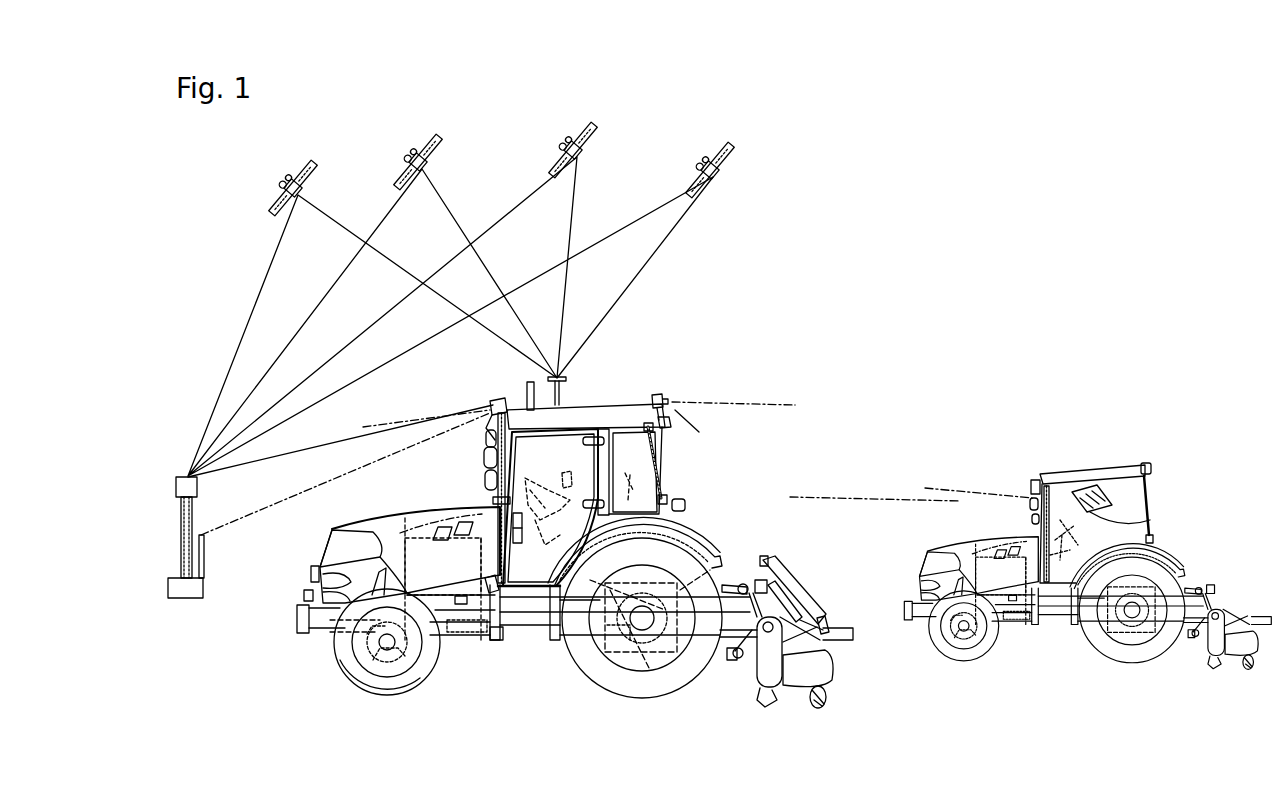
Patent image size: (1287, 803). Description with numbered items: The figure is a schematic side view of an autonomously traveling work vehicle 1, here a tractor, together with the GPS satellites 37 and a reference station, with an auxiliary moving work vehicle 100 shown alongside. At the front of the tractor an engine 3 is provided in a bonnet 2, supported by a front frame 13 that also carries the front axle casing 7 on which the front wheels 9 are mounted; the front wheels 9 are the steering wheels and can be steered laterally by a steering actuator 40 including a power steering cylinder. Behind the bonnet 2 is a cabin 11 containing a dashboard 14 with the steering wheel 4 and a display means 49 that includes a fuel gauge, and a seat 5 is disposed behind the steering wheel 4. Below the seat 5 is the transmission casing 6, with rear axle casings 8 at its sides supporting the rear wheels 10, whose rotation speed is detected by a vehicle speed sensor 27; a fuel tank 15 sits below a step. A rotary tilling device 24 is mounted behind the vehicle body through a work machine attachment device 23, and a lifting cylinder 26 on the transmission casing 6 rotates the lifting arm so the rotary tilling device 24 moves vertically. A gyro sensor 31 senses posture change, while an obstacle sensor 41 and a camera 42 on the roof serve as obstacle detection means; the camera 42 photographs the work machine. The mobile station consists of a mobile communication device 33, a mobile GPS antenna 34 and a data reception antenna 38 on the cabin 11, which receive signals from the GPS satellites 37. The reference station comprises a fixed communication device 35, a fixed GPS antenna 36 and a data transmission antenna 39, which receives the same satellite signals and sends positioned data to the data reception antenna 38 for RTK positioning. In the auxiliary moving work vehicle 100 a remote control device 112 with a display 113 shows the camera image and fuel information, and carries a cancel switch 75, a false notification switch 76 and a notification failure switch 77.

The autonomously traveling work vehicle 1 is at (681, 362).
The bonnet 2 is at (383, 507).
The engine 3 is at (497, 428).
The steering wheel 4 is at (565, 482).
The seat 5 is at (633, 473).
The transmission casing 6 is at (741, 567).
The front axle casing 7 is at (341, 678).
The rear axle casing 8 is at (670, 690).
The front wheels 9 is at (367, 692).
The rear wheels 10 is at (712, 675).
The cabin 11 is at (672, 462).
The front frame 13 is at (335, 625).
The dashboard 14 is at (538, 527).
The fuel tank 15 is at (496, 652).
The work machine attachment device 23 is at (748, 562).
The rotary tilling device 24 is at (800, 571).
The lifting cylinder 26 is at (695, 517).
The vehicle speed sensor 27 is at (607, 675).
The gyro sensor 31 is at (484, 460).
The mobile communication device 33 is at (493, 500).
The mobile GPS antenna 34 is at (566, 380).
The fixed communication device 35 is at (203, 588).
The fixed GPS antenna 36 is at (176, 478).
The GPS satellites 37 is at (283, 186).
The data reception antenna 38 is at (527, 383).
The data transmission antenna 39 is at (205, 560).
The steering actuator 40 is at (304, 594).
The obstacle sensor 41 is at (313, 564).
The camera 42 is at (492, 402).
The display means 49 is at (543, 495).
The cancel switch 75 is at (1125, 475).
The false notification switch 76 is at (1150, 502).
The notification failure switch 77 is at (1160, 522).
The auxiliary moving work vehicle 100 is at (1036, 380).
The remote control device 112 is at (1101, 461).
The display 113 is at (1062, 490).